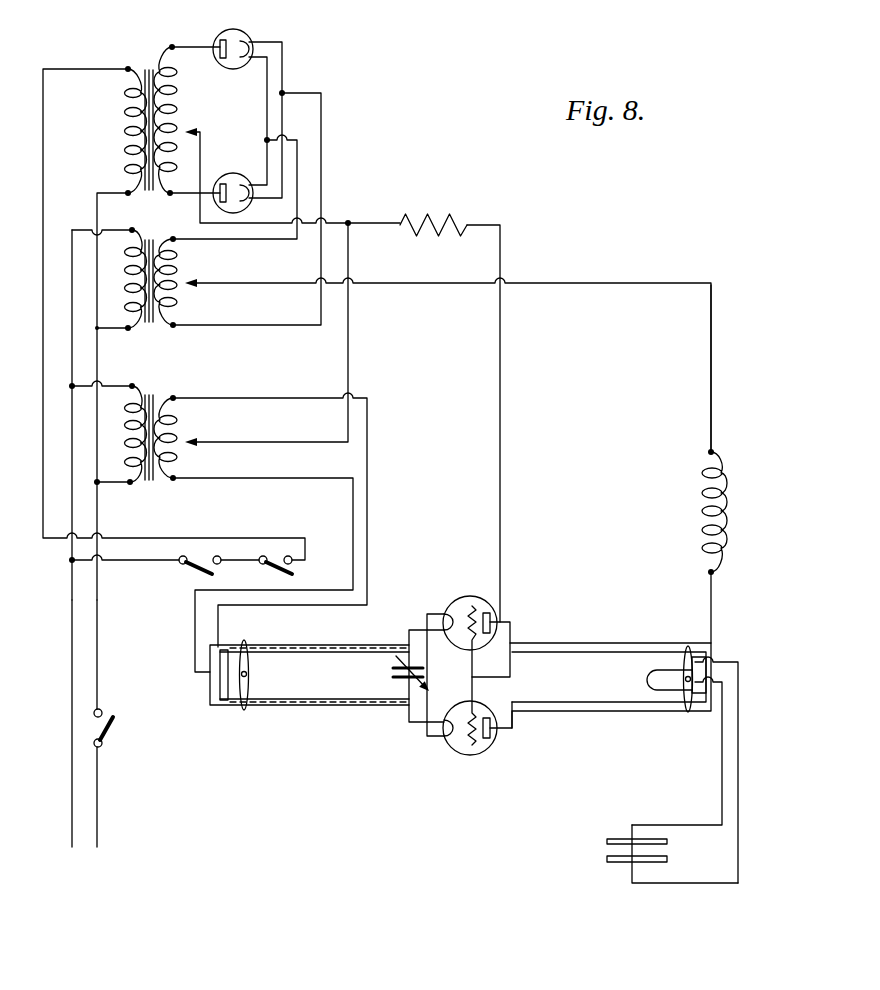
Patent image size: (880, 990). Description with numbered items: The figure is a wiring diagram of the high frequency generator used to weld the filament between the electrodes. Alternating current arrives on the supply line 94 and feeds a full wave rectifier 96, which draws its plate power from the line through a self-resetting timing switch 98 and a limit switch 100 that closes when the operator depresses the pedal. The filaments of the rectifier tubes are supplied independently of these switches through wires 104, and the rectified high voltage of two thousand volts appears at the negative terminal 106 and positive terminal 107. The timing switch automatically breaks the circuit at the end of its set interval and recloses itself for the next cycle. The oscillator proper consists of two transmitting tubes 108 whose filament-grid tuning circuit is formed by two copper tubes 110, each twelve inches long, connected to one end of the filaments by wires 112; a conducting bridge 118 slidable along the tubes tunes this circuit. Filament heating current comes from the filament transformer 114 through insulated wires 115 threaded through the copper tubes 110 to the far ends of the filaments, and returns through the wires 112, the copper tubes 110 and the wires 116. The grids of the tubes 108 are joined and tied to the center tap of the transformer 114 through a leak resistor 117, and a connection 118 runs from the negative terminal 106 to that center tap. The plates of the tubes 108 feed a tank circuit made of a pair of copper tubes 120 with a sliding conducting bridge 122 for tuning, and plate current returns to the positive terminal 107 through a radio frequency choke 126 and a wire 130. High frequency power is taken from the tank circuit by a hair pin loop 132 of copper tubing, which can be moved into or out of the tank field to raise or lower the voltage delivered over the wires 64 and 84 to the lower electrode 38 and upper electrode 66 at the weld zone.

The lower electrode 38 is at (607, 841).
The wire 64 is at (722, 762).
The upper electrode 66 is at (607, 858).
The wire 84 is at (738, 763).
The supply line 94 is at (73, 812).
The full wave rectifier 96 is at (326, 79).
The self-resetting timing switch 98 is at (193, 572).
The limit switch 100 is at (294, 572).
The wires 104 is at (297, 167).
The negative output terminal 106 is at (250, 226).
The positive output terminal 107 is at (289, 262).
The T-40 tubes 108 is at (462, 598).
The copper tubes 110 is at (325, 652).
The wires 112 is at (430, 720).
The filament transformer 114 is at (185, 421).
The insulated wires 115 is at (313, 632).
The wires 116 is at (368, 504).
The leak resistor 117 is at (441, 217).
The conducting bridge 118 is at (349, 348).
The copper tubes 120 is at (577, 672).
The sliding conducting bridge 122 is at (683, 652).
The radio frequency choke 126 is at (724, 500).
The wire 130 is at (712, 421).
The hair pin loop 132 is at (643, 691).